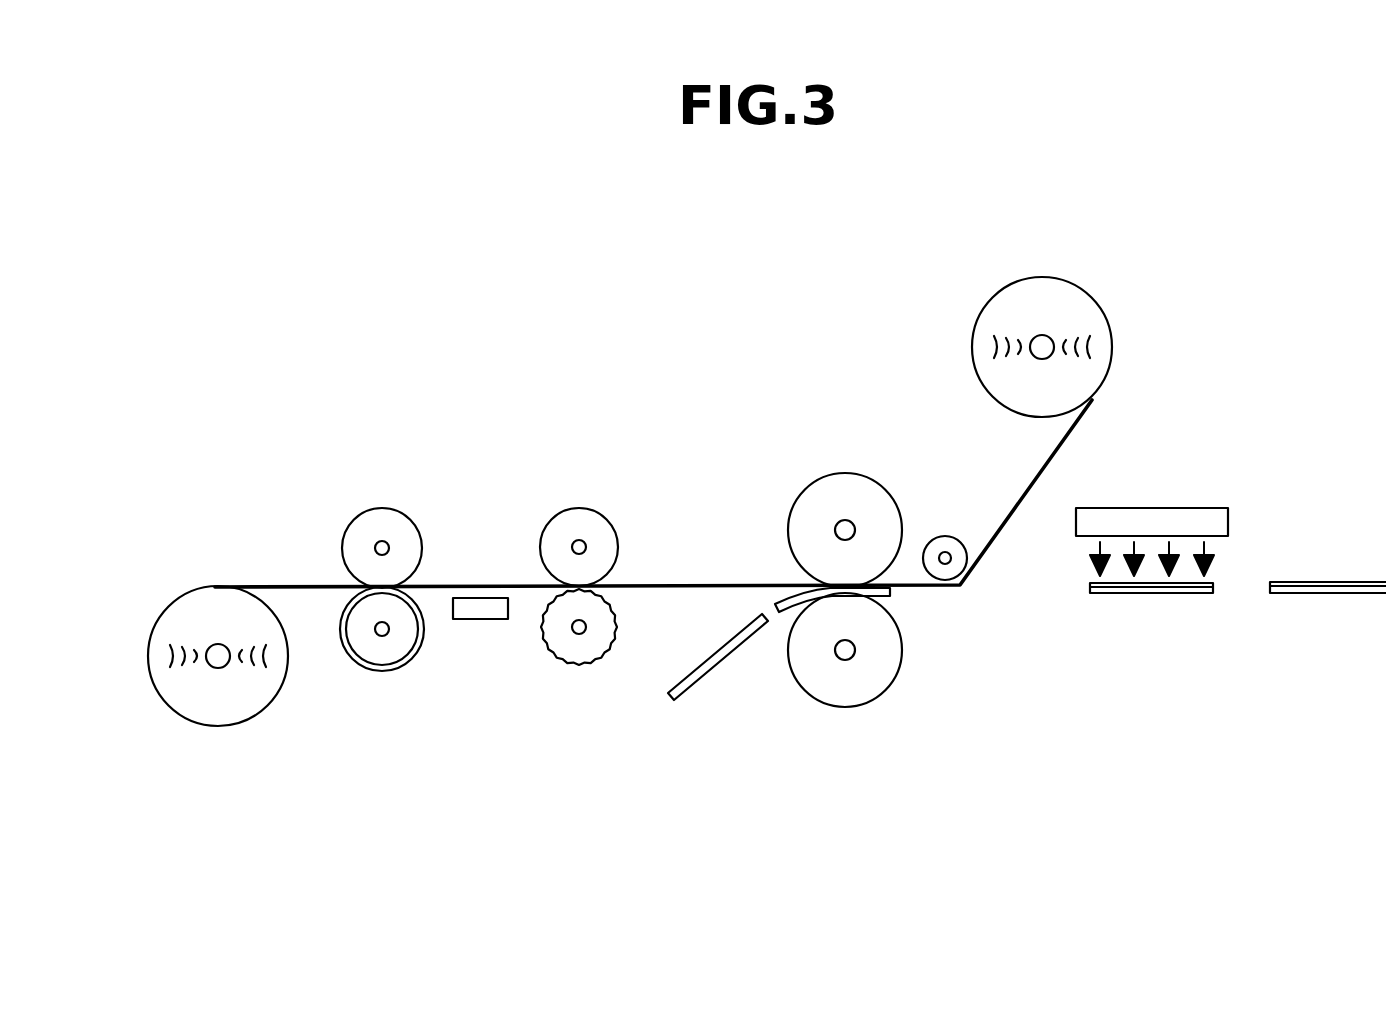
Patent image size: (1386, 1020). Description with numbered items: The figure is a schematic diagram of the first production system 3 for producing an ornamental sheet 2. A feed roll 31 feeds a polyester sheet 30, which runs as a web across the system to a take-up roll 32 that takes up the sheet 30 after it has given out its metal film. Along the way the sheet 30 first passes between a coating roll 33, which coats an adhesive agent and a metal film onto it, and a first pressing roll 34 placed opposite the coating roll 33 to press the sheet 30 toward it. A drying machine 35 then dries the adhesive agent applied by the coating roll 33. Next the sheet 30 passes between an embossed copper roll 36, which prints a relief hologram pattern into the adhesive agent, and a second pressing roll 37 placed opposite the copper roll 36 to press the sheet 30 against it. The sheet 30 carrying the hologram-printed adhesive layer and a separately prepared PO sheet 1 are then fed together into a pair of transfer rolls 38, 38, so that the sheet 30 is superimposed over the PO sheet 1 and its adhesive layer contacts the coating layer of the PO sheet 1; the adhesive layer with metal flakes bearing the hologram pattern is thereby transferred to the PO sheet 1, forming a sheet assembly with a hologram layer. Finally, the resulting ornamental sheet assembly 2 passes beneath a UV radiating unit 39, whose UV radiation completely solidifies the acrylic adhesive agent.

The PO sheet 1 is at (716, 668).
The ornamental sheet 2 is at (1147, 593).
The first production system 3 is at (728, 408).
The polyester sheet 30 is at (296, 582).
The feed roll 31 is at (215, 668).
The take-up roll 32 is at (1043, 335).
The coating roll 33 is at (384, 660).
The first pressing roll 34 is at (383, 522).
The drying machine 35 is at (481, 614).
The embossed copper roll 36 is at (581, 652).
The second pressing roll 37 is at (581, 522).
The transfer rolls 38 is at (845, 492).
The UV radiating unit 39 is at (1163, 516).